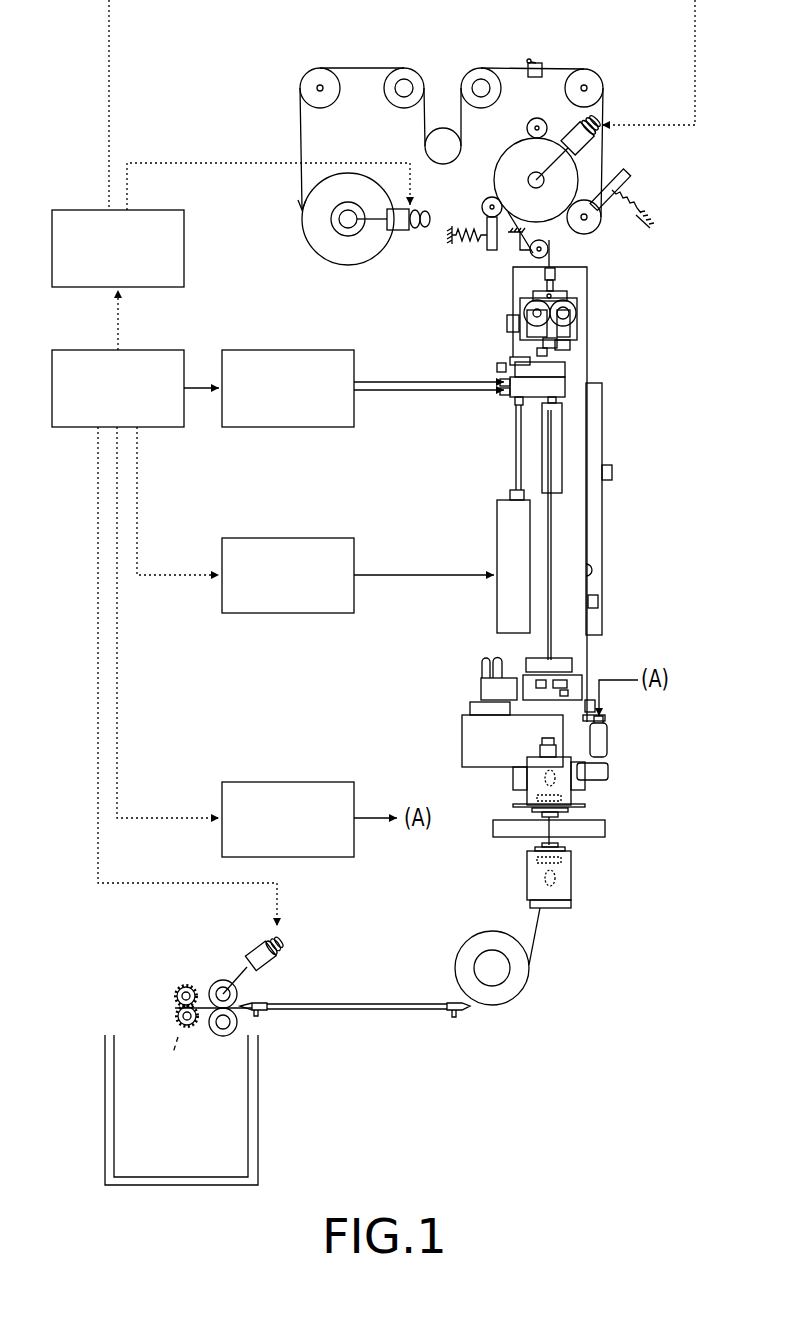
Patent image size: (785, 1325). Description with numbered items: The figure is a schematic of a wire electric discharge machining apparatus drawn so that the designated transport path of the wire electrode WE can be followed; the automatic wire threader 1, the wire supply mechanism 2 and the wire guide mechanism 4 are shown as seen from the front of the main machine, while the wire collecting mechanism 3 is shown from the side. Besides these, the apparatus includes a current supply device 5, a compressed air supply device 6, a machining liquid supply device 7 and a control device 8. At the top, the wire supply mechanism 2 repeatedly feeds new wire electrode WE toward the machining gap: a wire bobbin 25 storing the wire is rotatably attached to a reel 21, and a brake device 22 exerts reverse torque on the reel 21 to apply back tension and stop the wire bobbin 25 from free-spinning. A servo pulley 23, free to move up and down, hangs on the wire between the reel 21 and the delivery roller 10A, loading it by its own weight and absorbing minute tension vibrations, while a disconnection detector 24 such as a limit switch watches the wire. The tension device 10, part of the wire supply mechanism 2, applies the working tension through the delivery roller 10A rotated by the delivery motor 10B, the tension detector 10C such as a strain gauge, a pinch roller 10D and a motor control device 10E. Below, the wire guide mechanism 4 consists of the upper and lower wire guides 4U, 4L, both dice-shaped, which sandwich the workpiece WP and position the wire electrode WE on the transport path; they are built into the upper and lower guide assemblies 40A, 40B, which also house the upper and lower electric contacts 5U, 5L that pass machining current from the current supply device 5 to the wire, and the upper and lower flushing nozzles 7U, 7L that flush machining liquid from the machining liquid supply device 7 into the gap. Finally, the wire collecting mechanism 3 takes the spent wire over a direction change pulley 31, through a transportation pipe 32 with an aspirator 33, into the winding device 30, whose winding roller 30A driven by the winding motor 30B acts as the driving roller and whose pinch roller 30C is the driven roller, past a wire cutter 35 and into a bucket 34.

The automatic wire threader 1 is at (638, 298).
The wire supply mechanism 2 is at (437, 152).
The wire collecting mechanism 3 is at (317, 1044).
The wire guide mechanism 4 is at (554, 840).
The current supply device 5 is at (330, 540).
The compressed air supply device 6 is at (335, 352).
The machining liquid supply device 7 is at (330, 782).
The control device 8 is at (163, 352).
The tension device 10 is at (544, 190).
The delivery roller 10A is at (578, 185).
The delivery motor 10B is at (568, 132).
The tension detector 10C is at (516, 250).
The pinch roller 10D is at (488, 200).
The motor control device 10E is at (145, 212).
The reel 21 is at (346, 220).
The brake device 22 is at (410, 228).
The servo pulley 23 is at (427, 155).
The disconnection detector 24 is at (543, 62).
The wire bobbin 25 is at (342, 262).
The winding device 30 is at (218, 987).
The winding roller 30A is at (217, 988).
The winding motor 30B is at (258, 948).
The pinch roller 30C is at (236, 1026).
The direction change pulley 31 is at (470, 947).
The transportation pipe 32 is at (355, 1003).
The aspirator 33 is at (266, 1003).
The bucket 34 is at (258, 1095).
The wire cutter 35 is at (173, 1004).
The upper guide assembly 40A is at (606, 746).
The lower guide assembly 40B is at (571, 907).
The upper wire guide 4U is at (563, 806).
The lower wire guide 4L is at (536, 858).
The upper electric contact 5U is at (527, 776).
The lower electric contact 5L is at (556, 880).
The upper flushing nozzle 7U is at (562, 817).
The lower flushing nozzle 7L is at (538, 845).
The wire electrode WE is at (346, 50).
The workpiece WP is at (493, 829).